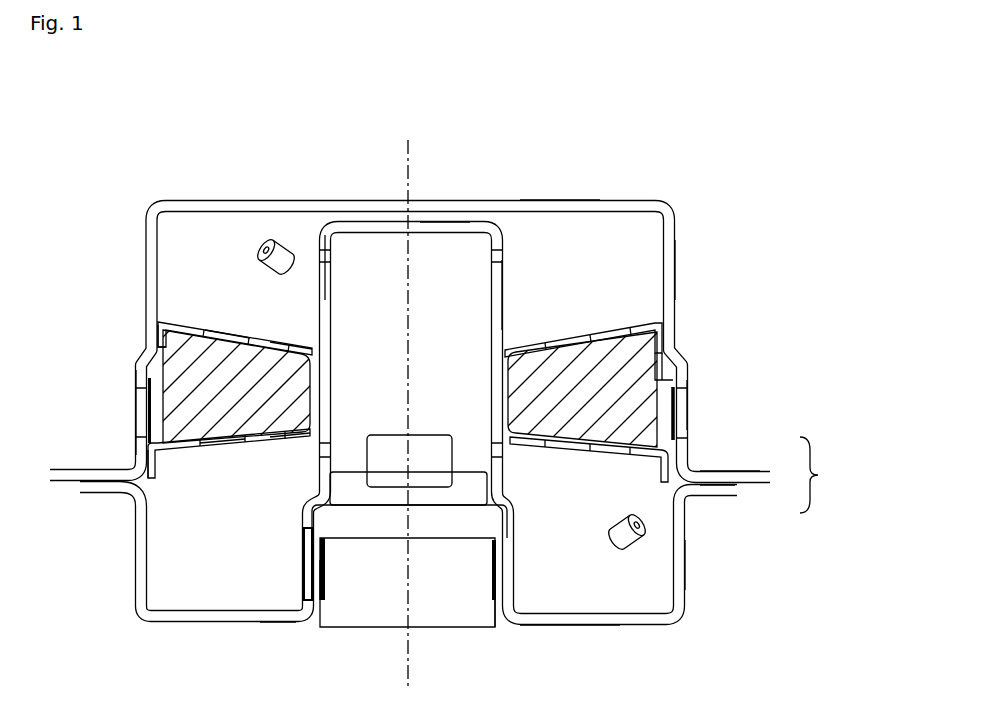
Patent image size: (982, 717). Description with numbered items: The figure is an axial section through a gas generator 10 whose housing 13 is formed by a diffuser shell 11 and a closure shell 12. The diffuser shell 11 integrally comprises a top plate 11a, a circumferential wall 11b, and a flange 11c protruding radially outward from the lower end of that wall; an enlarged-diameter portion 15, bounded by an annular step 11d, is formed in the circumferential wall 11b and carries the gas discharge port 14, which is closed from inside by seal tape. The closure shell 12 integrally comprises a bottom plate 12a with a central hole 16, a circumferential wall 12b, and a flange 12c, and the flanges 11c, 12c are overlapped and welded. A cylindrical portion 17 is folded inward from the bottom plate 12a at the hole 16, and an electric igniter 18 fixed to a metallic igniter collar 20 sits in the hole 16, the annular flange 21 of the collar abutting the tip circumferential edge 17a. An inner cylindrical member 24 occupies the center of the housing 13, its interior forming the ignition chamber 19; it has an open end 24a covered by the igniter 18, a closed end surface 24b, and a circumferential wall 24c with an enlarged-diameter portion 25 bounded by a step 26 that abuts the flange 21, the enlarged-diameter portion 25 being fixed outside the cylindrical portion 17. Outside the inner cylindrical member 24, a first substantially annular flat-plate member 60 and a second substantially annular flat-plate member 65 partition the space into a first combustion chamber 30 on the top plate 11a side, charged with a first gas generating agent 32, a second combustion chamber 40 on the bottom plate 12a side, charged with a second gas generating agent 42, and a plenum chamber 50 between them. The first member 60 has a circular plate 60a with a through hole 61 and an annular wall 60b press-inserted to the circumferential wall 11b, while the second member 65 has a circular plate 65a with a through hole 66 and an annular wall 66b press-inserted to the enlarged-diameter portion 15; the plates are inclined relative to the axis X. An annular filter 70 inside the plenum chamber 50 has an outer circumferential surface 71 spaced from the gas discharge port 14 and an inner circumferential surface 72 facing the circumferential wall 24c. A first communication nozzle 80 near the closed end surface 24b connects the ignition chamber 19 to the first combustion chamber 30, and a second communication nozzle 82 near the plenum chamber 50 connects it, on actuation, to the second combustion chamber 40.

The gas generator 10 is at (612, 183).
The diffuser shell 11 is at (683, 448).
The top plate 11a is at (538, 200).
The circumferential wall 11b is at (676, 250).
The flange 11c is at (705, 470).
The annular step 11d is at (680, 355).
The closure shell 12 is at (687, 540).
The bottom plate 12a is at (562, 622).
The circumferential wall 12b is at (685, 578).
The flange 12c is at (700, 492).
The housing 13 is at (827, 475).
The gas discharge port 14 is at (680, 408).
The enlarged-diameter portion 15 is at (135, 380).
The hole 16 is at (497, 605).
The cylindrical portion 17 is at (320, 580).
The tip circumferential edge 17a is at (323, 538).
The electric igniter 18 is at (409, 461).
The ignition chamber 19 is at (380, 331).
The igniter collar 20 is at (441, 592).
The annular flange 21 is at (307, 528).
The inner cylindrical member 24 is at (363, 226).
The open end 24a is at (297, 605).
The closed end surface 24b is at (423, 214).
The circumferential wall 24c is at (503, 292).
The enlarged-diameter portion 25 is at (513, 553).
The step 26 is at (318, 493).
The first combustion chamber 30 is at (212, 244).
The first gas generating agent 32 is at (287, 253).
The second combustion chamber 40 is at (185, 558).
The second gas generating agent 42 is at (630, 545).
The plenum chamber 50 is at (158, 372).
The first substantially annular flat-plate member 60 is at (178, 325).
The circular plate 60a is at (228, 333).
The annular wall 60b is at (160, 332).
The through hole 61 is at (283, 348).
The second substantially annular flat-plate member 65 is at (165, 452).
The circular plate 65a is at (212, 445).
The through hole 66 is at (283, 438).
The annular wall 66b is at (150, 466).
The annular filter 70 is at (586, 390).
The outer circumferential surface 71 is at (687, 373).
The inner circumferential surface 72 is at (508, 378).
The first communication nozzle 80 is at (332, 256).
The second communication nozzle 82 is at (508, 450).